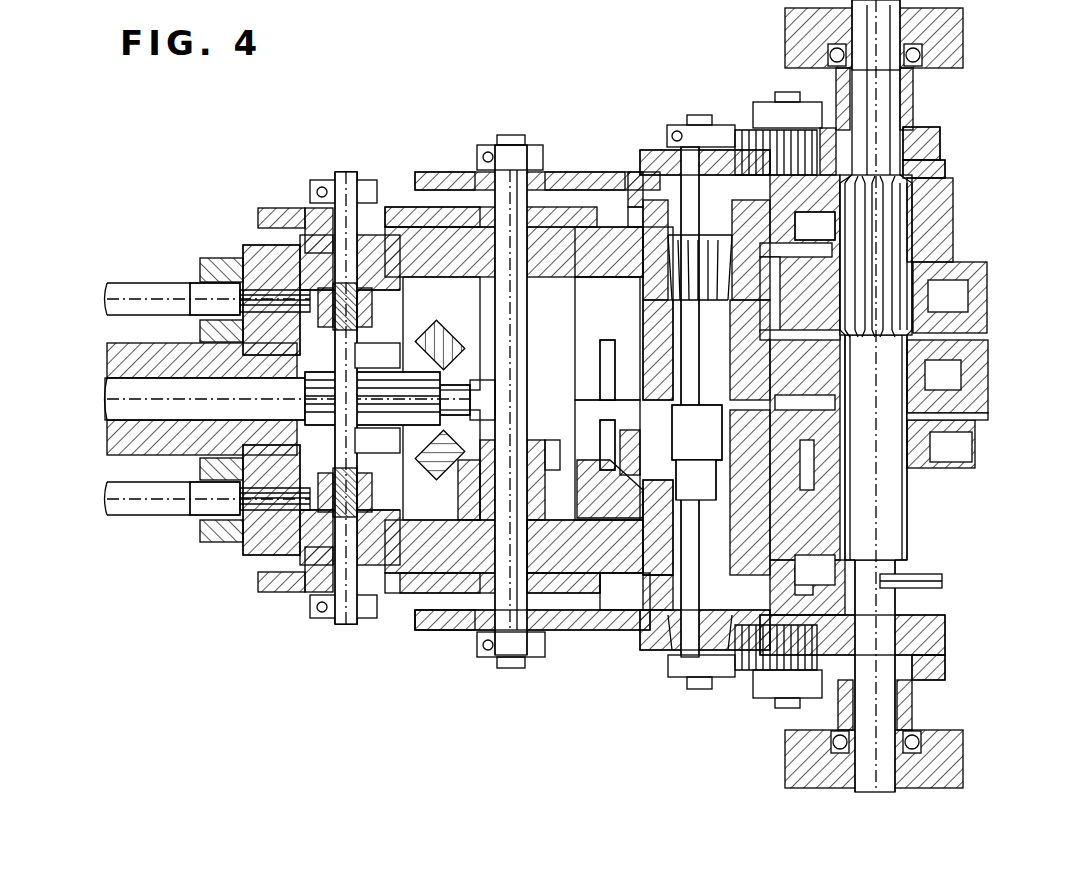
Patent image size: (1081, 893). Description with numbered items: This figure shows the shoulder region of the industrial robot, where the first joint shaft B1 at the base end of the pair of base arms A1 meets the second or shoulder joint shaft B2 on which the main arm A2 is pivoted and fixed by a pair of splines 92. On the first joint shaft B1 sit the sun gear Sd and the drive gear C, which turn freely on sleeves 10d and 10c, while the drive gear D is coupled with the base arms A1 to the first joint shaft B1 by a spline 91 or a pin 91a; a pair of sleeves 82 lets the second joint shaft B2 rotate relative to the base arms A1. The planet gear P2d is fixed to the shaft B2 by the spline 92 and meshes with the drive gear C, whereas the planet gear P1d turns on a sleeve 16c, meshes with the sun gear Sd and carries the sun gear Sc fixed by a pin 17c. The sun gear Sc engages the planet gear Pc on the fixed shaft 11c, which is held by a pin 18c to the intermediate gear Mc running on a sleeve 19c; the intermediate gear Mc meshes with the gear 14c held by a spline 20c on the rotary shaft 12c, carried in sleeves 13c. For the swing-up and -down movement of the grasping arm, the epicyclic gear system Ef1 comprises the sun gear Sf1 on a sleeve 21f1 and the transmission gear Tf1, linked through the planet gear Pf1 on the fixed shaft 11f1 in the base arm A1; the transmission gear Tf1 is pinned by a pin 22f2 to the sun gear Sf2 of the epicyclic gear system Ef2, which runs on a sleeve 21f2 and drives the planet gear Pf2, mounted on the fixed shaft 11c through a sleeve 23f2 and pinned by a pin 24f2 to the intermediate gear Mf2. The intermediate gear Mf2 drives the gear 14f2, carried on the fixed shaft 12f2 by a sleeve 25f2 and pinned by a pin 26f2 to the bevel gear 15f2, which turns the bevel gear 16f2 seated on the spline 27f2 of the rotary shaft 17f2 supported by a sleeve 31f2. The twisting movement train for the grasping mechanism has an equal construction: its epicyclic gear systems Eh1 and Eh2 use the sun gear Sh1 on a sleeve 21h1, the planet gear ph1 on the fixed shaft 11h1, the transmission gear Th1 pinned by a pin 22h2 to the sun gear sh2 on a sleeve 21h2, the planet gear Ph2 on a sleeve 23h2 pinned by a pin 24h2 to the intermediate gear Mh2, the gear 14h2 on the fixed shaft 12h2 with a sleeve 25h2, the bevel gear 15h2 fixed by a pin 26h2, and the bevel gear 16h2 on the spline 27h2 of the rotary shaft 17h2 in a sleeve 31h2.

The rotary shaft 12c is at (230, 402).
The rotary shaft 17h2 is at (120, 300).
The rotary shaft 17f2 is at (120, 497).
The sleeve 31h2 is at (215, 268).
The sleeve 31f2 is at (215, 530).
The spline 27h2 is at (248, 252).
The spline 27f2 is at (258, 548).
The bevel gear 16h2 is at (272, 262).
The bevel gear 16f2 is at (265, 574).
The pin 26h2 is at (311, 200).
The pin 26f2 is at (312, 612).
The fixed shaft 12h2 is at (337, 178).
The fixed shaft 12f2 is at (342, 624).
The sleeve 25h2 is at (346, 172).
The sleeve 25f2 is at (347, 625).
The gear 14h2 is at (415, 207).
The gear 14f2 is at (412, 595).
The bevel gear 15h2 is at (455, 172).
The bevel gear 15f2 is at (395, 612).
The pin 24h2 is at (478, 172).
The pin 24f2 is at (480, 658).
The sleeve 23h2 is at (510, 140).
The sleeve 23f2 is at (508, 668).
The fixed shaft 11c is at (518, 300).
The sleeve 13c is at (415, 345).
The gear 14c is at (425, 448).
The spline 20c is at (470, 360).
The sleeve 19c is at (515, 385).
The intermediate gear Mc is at (548, 440).
The planet gear Pc is at (456, 500).
The sun gear Sc is at (610, 489).
The pin 17c is at (625, 440).
The sleeve 16c is at (688, 462).
The pin 18c is at (605, 595).
The intermediate gear Mh2 is at (578, 275).
The intermediate gear Mf2 is at (582, 600).
The planet gear Ph2 is at (575, 172).
The planet gear Pf2 is at (548, 640).
The epicyclic gear system Eh2 is at (575, 118).
The epicyclic gear system Ef2 is at (575, 738).
The transmission gear Th1 is at (636, 172).
The transmission gear Tf1 is at (650, 655).
The sun gear sh2 is at (630, 176).
The sun gear Sf2 is at (600, 635).
The pin 22h2 is at (652, 150).
The pin 22f2 is at (680, 655).
The sleeve 21h2 is at (690, 124).
The sleeve 21f2 is at (700, 690).
The sleeve 82 is at (668, 226).
The spline 92 is at (650, 320).
The planet gear P2d is at (608, 342).
The planet gear P1d is at (622, 428).
The second joint shaft B2 is at (697, 432).
The first joint shaft B1 is at (876, 396).
The base arm A1 is at (815, 398).
The main arm A2 is at (377, 400).
The planet gear ph1 is at (738, 130).
The planet gear Pf1 is at (742, 680).
The fixed shaft 11h1 is at (792, 100).
The fixed shaft 11f1 is at (788, 705).
The epicyclic gear system Eh1 is at (778, 62).
The epicyclic gear system Ef1 is at (780, 760).
The sun gear Sh1 is at (941, 140).
The sun gear Sf1 is at (946, 667).
The sleeve 21h1 is at (935, 170).
The sleeve 21f1 is at (935, 640).
The spline 91 is at (912, 245).
The pin 91a is at (944, 580).
The drive gear D is at (950, 297).
The drive gear C is at (943, 377).
The sun gear Sd is at (941, 444).
The sleeve 10c is at (915, 372).
The sleeve 10d is at (945, 420).